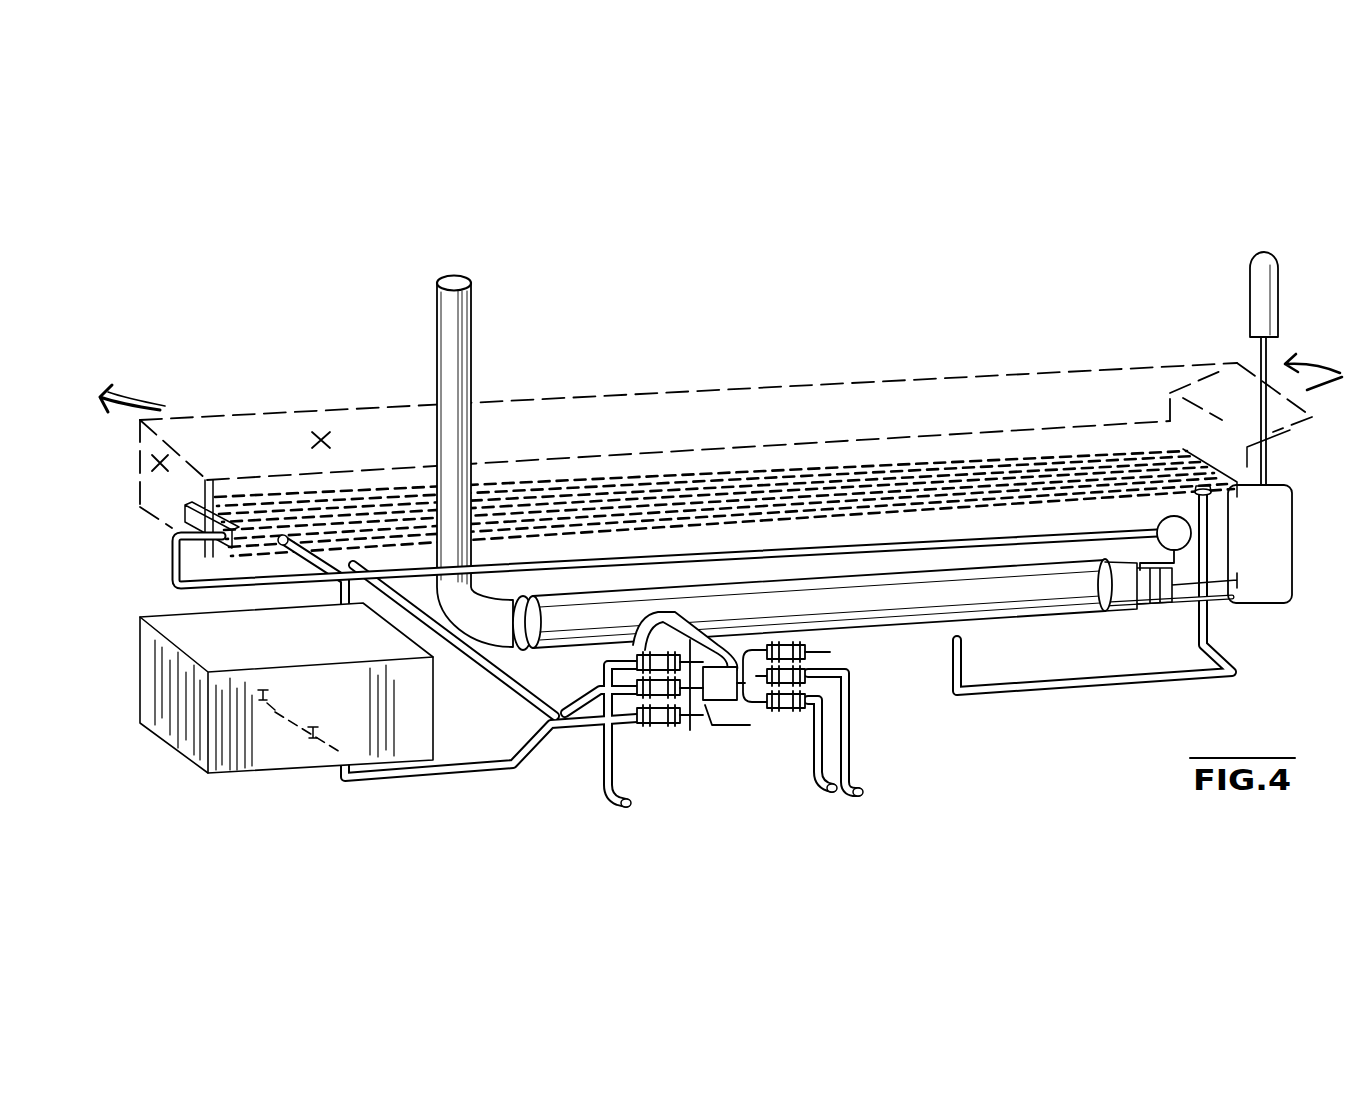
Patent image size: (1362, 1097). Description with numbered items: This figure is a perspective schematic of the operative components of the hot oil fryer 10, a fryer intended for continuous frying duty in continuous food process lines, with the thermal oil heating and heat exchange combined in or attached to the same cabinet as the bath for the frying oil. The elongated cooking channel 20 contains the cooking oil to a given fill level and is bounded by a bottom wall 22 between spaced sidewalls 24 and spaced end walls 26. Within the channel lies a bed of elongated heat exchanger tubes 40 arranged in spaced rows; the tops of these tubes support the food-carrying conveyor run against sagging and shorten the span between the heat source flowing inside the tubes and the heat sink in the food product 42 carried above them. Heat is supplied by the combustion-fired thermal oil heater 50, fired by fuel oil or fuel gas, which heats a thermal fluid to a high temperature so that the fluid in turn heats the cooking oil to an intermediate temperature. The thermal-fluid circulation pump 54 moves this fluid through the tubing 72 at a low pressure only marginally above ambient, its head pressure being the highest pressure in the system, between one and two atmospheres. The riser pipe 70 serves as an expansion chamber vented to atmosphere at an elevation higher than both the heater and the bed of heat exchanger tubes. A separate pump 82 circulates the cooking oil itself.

The hot oil fryer 10 is at (702, 335).
The cooking channel 20 is at (262, 412).
The bottom wall 22 is at (168, 541).
The sidewalls 24 is at (332, 442).
The end walls 26 is at (178, 460).
The heat exchanger tubes 40 is at (700, 466).
The food product 42 is at (122, 394).
The combustion-fired thermal oil heater 50 is at (1047, 623).
The thermal-fluid circulation pump 54 is at (1156, 526).
The riser pipe 70 is at (1260, 250).
The tubing 72 is at (1288, 554).
The pump 82 is at (706, 722).